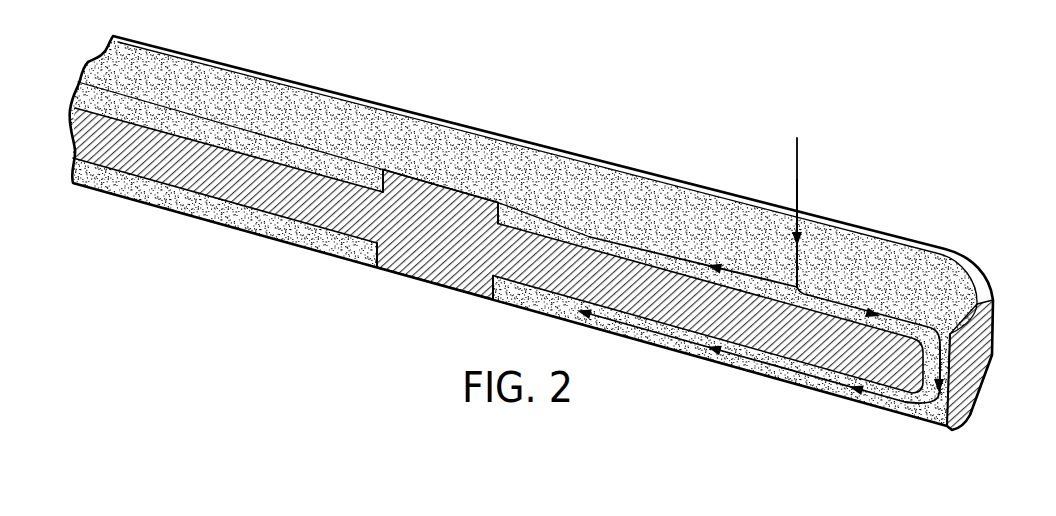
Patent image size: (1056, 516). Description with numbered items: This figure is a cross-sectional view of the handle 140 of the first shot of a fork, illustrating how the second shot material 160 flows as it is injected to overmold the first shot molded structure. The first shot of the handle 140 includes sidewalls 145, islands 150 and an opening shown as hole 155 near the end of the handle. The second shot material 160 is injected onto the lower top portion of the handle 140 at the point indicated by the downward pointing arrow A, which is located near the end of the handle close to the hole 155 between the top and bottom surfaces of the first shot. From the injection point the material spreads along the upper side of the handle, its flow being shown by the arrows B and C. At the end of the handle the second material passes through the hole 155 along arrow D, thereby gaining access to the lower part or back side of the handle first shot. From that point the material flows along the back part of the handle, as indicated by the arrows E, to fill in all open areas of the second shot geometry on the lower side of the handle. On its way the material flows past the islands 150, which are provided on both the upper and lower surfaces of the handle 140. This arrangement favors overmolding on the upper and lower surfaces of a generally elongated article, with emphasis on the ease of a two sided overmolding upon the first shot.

The handle 140 is at (723, 323).
The sidewalls 145 is at (603, 163).
The islands 150 is at (447, 182).
The hole 155 is at (941, 439).
The second shot material 160 is at (797, 140).
The injection point arrow A is at (799, 178).
The flow arrow B is at (640, 250).
The flow arrow C is at (848, 300).
The flow arrow D is at (975, 362).
The flow arrow E is at (632, 345).